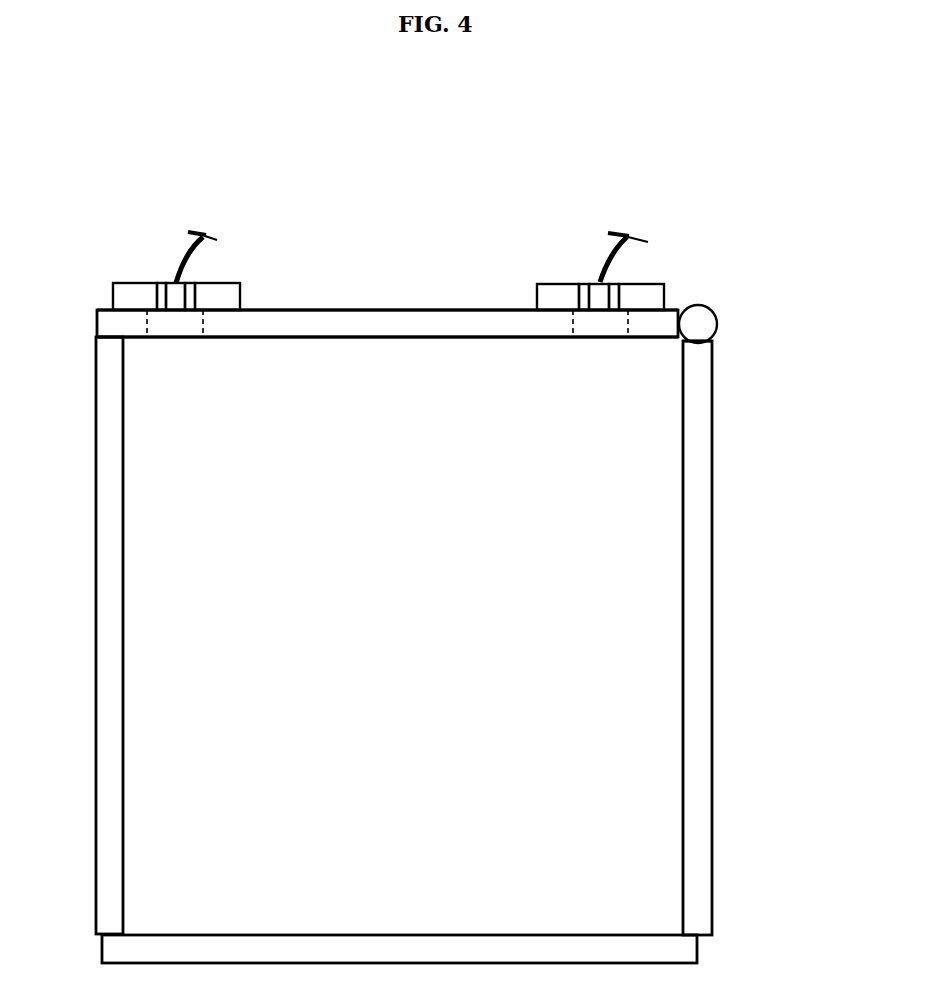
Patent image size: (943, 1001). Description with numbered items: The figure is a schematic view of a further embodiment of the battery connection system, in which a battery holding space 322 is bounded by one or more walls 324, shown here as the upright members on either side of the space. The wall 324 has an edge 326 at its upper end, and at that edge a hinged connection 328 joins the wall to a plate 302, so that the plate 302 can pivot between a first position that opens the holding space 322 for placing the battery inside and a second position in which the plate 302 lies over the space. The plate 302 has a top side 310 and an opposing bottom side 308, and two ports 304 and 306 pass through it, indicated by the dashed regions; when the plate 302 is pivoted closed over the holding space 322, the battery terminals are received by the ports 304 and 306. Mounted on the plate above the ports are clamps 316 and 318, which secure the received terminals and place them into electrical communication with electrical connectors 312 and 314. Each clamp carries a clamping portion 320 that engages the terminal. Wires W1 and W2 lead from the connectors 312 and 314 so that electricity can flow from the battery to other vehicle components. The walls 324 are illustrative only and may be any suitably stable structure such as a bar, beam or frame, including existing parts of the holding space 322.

The plate 302 is at (108, 328).
The port 304 is at (193, 330).
The port 306 is at (617, 334).
The bottom surface of top member 308 is at (383, 337).
The top surface of top member 310 is at (382, 310).
The electrical connector 312 is at (164, 274).
The electrical connector 314 is at (578, 272).
The clamp 316 is at (130, 292).
The clamp 318 is at (542, 298).
The terminal connector 320 is at (193, 302).
The battery holding space 322 is at (433, 644).
The wall 324 is at (700, 472).
The edge 326 is at (697, 343).
The hinged connection 328 is at (702, 325).
The wire W1 is at (190, 265).
The wire W2 is at (607, 264).